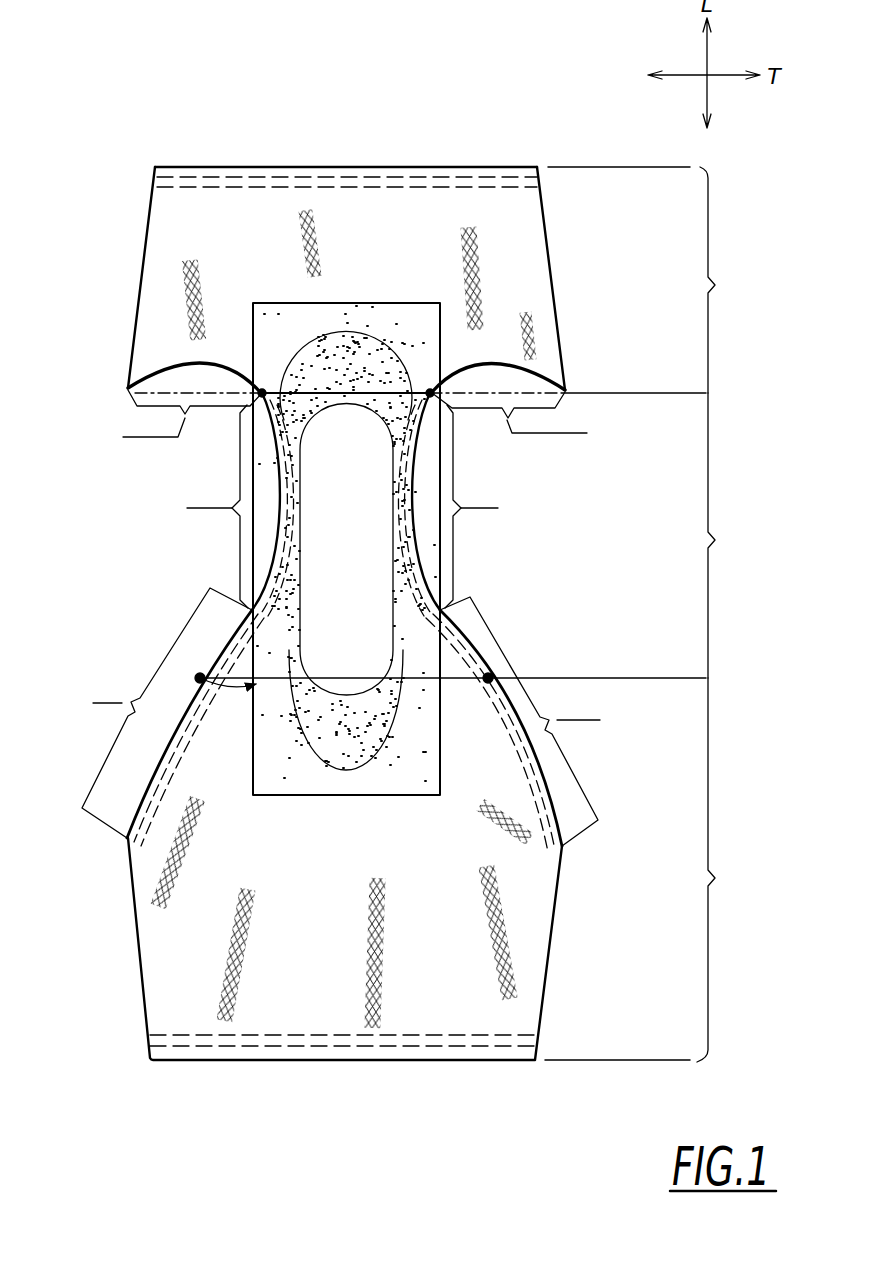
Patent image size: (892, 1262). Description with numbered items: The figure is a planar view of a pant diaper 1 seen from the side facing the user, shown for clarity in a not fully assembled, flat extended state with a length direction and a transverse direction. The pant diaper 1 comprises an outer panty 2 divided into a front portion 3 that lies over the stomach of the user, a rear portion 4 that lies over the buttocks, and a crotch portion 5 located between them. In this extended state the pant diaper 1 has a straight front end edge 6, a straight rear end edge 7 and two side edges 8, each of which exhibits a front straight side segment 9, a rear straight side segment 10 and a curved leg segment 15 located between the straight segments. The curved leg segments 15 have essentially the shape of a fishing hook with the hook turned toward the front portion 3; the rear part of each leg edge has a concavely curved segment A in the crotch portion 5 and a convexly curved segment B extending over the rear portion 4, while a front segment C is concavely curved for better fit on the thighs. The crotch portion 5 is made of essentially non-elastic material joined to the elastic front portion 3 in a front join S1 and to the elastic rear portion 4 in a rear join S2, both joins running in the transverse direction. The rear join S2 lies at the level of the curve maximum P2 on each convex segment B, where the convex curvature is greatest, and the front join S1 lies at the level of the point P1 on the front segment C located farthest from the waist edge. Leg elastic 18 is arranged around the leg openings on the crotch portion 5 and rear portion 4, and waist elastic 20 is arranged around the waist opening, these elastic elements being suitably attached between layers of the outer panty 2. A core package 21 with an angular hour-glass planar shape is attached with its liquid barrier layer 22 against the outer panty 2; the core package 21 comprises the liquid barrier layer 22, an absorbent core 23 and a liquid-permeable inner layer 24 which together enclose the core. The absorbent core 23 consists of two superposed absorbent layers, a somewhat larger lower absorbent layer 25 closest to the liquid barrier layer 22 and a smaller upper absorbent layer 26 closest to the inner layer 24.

The pant diaper 1 is at (165, 118).
The outer panty 2 is at (222, 215).
The front portion 3 is at (750, 289).
The rear portion 4 is at (750, 879).
The crotch portion 5 is at (750, 549).
The front end edge 6 is at (458, 167).
The rear end edge 7 is at (371, 1062).
The side edge 8 is at (230, 632).
The front straight side segment 9 is at (140, 262).
The rear straight side segment 10 is at (142, 988).
The curved leg segment 15 is at (155, 505).
The leg elastic 18 is at (165, 800).
The waist elastic 20 is at (330, 195).
The core package 21 is at (358, 585).
The liquid barrier layer 22 is at (408, 778).
The absorbent core 23 is at (363, 477).
The liquid-permeable inner layer 24 is at (268, 355).
The lower absorbent layer 25 is at (300, 712).
The upper absorbent layer 26 is at (337, 670).
The point on front segment farthest from waist edge P1 is at (262, 380).
The curve maximum P2 is at (200, 672).
The front join S1 is at (383, 387).
The rear join S2 is at (200, 678).